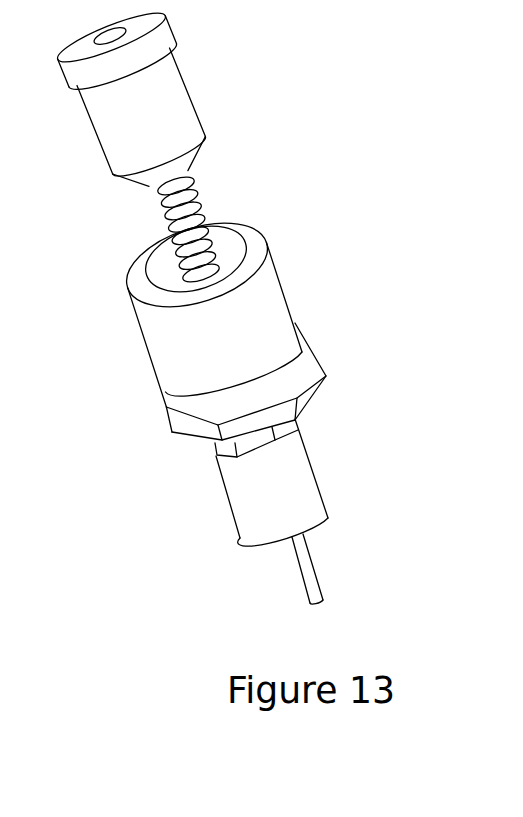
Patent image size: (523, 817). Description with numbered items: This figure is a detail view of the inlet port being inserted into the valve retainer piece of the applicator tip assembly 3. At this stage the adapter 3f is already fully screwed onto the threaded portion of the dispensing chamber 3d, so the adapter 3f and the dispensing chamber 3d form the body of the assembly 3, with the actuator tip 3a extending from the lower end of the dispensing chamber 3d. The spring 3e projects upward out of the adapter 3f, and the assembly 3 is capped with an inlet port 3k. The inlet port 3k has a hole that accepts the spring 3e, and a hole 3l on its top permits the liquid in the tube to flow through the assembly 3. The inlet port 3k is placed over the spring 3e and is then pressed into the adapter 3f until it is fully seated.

The applicator tip assembly 3 is at (114, 316).
The actuator tip 3a is at (315, 562).
The dispensing chamber 3d is at (238, 505).
The spring 3e is at (207, 205).
The adapter 3f is at (178, 383).
The inlet port 3k is at (167, 98).
The hole 3l is at (106, 33).